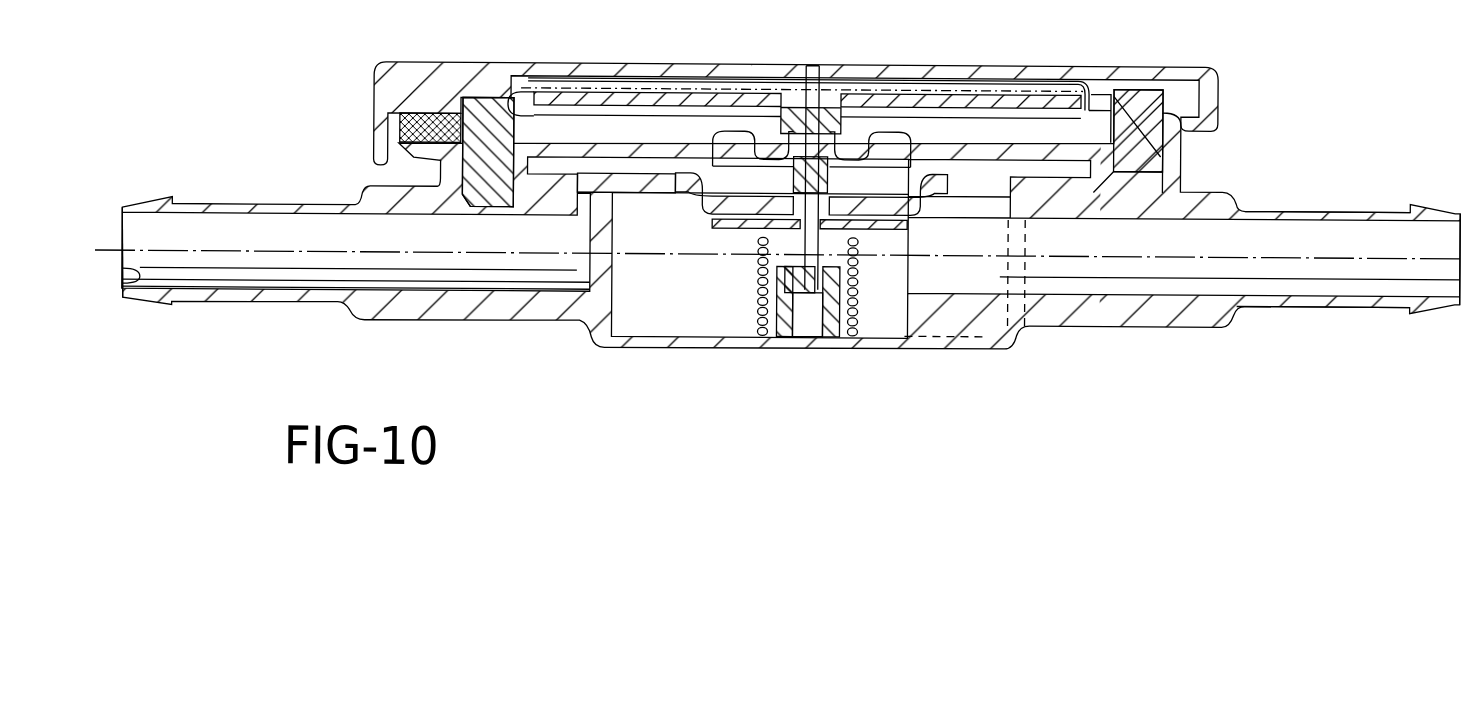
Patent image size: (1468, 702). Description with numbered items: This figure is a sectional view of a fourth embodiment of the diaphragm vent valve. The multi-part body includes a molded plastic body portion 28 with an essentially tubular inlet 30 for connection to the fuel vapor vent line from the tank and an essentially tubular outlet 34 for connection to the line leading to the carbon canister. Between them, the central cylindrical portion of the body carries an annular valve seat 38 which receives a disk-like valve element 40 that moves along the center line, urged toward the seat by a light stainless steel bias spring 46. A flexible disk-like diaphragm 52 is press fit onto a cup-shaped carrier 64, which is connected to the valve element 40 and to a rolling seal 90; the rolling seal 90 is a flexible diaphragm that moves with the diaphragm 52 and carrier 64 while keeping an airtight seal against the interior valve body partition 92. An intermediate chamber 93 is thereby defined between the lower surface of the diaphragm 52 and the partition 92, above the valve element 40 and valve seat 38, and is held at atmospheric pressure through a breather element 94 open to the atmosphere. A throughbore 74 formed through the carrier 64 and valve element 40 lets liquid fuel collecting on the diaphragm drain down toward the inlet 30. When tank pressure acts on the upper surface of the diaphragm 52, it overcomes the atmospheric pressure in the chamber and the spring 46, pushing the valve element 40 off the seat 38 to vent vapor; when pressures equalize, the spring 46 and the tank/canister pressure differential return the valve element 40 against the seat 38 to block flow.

The first molded plastic body portion 28 is at (1298, 301).
The inlet 30 is at (1315, 214).
The outlet 34 is at (123, 268).
The valve seat 38 is at (753, 232).
The valve element 40 is at (870, 238).
The bias spring 46 is at (860, 302).
The diaphragm 52 is at (860, 85).
The carrier 64 is at (1018, 98).
The throughbore 74 is at (815, 80).
The rolling seal 90 is at (855, 135).
The interior valve body partition 92 is at (1047, 147).
The intermediate chamber 93 is at (1103, 120).
The breather element 94 is at (399, 128).